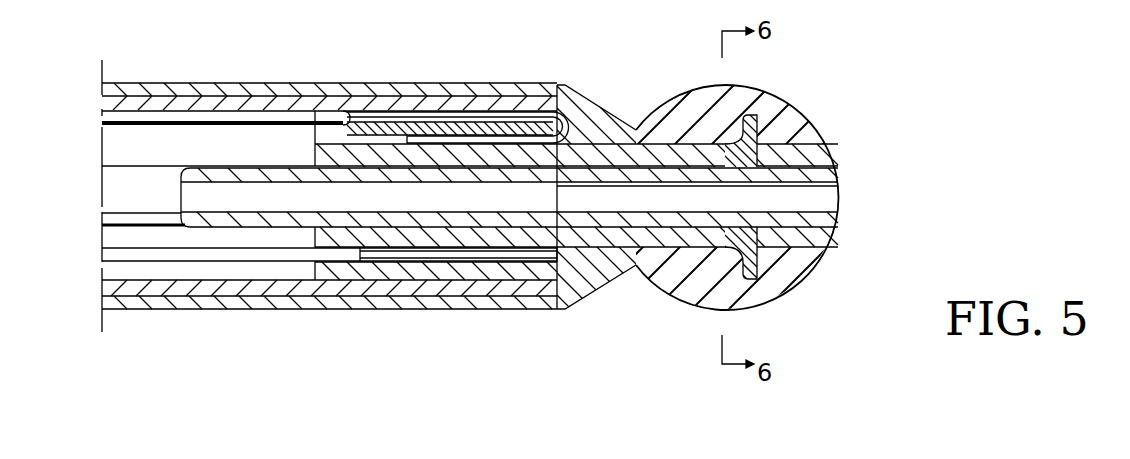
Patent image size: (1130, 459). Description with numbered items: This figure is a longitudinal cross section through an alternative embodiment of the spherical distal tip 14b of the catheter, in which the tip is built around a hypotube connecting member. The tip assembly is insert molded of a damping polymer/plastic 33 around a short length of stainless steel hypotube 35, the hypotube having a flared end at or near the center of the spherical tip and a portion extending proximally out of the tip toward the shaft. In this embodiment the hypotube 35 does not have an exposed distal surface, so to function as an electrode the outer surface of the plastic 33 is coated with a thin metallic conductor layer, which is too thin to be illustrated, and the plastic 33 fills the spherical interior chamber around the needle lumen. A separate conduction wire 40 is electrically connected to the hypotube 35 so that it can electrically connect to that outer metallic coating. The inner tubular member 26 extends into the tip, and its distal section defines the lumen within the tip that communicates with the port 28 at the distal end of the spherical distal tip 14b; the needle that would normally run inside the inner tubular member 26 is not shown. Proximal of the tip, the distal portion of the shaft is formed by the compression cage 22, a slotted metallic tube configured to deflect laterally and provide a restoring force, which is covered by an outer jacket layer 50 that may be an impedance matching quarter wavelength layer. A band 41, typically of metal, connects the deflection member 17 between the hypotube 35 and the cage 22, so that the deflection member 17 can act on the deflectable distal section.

The spherical distal tip 14b is at (758, 153).
The deflection member 17 is at (305, 117).
The compression cage 22 is at (191, 287).
The inner tubular member 26 is at (233, 172).
The port 28 is at (830, 200).
The polymer/plastic 33 is at (780, 261).
The hypotube 35 is at (611, 240).
The conduction wire 40 is at (287, 257).
The band 41 is at (488, 124).
The outer jacket layer 50 is at (470, 305).